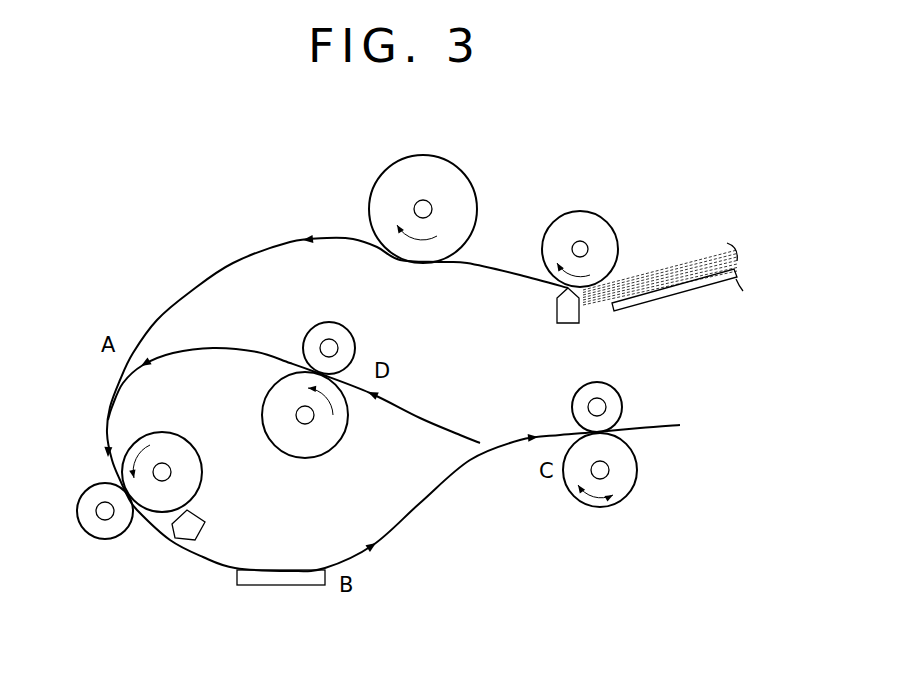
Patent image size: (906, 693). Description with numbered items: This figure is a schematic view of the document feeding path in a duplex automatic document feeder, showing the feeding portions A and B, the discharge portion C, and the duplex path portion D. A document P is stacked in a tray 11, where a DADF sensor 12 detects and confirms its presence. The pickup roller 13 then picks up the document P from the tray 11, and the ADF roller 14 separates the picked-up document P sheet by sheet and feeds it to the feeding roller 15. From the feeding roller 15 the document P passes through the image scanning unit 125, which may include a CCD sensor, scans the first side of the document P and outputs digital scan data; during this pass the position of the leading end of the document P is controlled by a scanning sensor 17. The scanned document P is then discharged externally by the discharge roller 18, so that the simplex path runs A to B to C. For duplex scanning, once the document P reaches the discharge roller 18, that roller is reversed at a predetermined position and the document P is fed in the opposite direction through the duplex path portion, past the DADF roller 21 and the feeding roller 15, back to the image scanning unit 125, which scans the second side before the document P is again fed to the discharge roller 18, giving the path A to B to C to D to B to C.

The tray 11 is at (700, 292).
The DADF sensor 12 is at (572, 323).
The pickup roller 13 is at (590, 212).
The ADF roller 14 is at (422, 152).
The feeding roller 15 is at (184, 437).
The scanning sensor 17 is at (187, 535).
The discharge roller 18 is at (630, 500).
The DADF roller 21 is at (262, 400).
The image scanning unit 125 is at (272, 586).
The document P is at (706, 258).